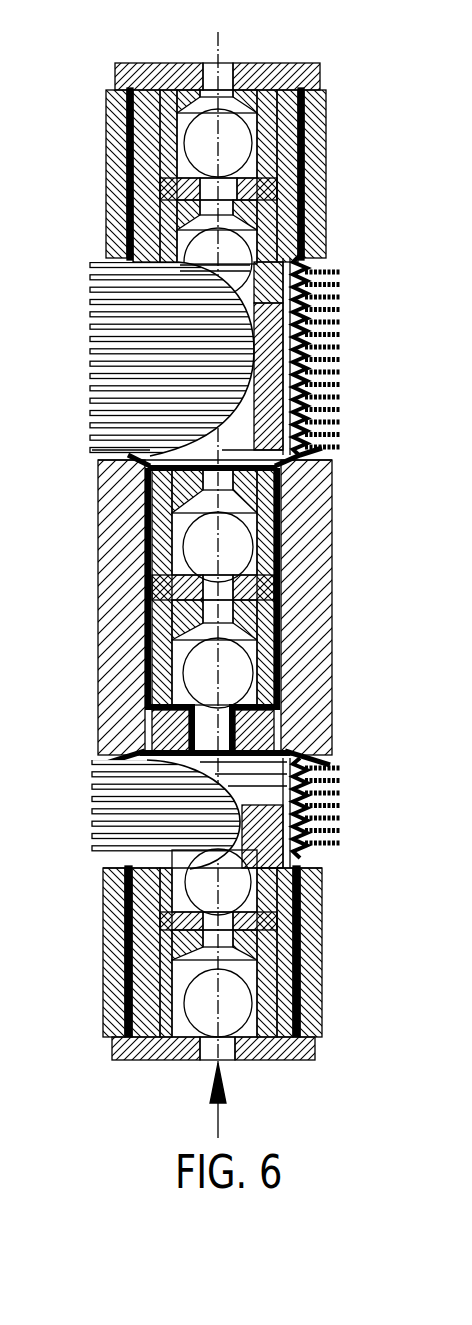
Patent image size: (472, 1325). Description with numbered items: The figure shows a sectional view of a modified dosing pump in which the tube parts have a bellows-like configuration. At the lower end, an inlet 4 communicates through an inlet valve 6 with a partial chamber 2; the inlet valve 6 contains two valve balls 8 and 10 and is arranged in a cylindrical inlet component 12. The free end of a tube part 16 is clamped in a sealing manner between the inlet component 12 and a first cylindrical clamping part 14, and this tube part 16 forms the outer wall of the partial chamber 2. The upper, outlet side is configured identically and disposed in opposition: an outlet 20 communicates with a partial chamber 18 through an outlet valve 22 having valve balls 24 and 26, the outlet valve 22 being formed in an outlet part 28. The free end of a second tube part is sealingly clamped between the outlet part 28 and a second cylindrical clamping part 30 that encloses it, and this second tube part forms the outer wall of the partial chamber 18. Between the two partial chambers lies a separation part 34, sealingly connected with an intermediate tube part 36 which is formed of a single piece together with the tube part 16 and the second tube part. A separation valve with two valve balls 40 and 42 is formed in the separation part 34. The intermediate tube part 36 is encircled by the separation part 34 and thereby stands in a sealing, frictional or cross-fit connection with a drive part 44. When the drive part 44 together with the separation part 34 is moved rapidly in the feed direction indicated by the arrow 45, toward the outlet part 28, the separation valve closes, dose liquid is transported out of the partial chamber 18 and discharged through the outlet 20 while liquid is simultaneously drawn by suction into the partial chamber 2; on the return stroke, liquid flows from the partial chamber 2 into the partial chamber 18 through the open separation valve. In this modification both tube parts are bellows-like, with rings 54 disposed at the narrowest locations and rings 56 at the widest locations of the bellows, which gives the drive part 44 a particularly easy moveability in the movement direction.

The partial chamber 2 is at (317, 742).
The inlet 4 is at (228, 1070).
The inlet valve 6 is at (228, 988).
The valve ball 8 is at (233, 885).
The valve ball 10 is at (292, 970).
The inlet component 12 is at (307, 1047).
The first cylindrical clamping part 14 is at (108, 912).
The tube part 16 is at (300, 910).
The partial chamber 18 is at (322, 462).
The outlet 20 is at (218, 66).
The outlet valve 22 is at (300, 113).
The valve ball 24 is at (305, 192).
The valve ball 26 is at (230, 257).
The outlet part 28 is at (308, 77).
The second cylindrical clamping part 30 is at (240, 155).
The separation part 34 is at (262, 613).
The intermediate tube part 36 is at (280, 553).
The valve ball 40 is at (190, 538).
The valve ball 42 is at (223, 692).
The drive part 44 is at (330, 653).
The arrow 45 is at (216, 1115).
The rings 54 is at (325, 278).
The rings 56 is at (325, 340).